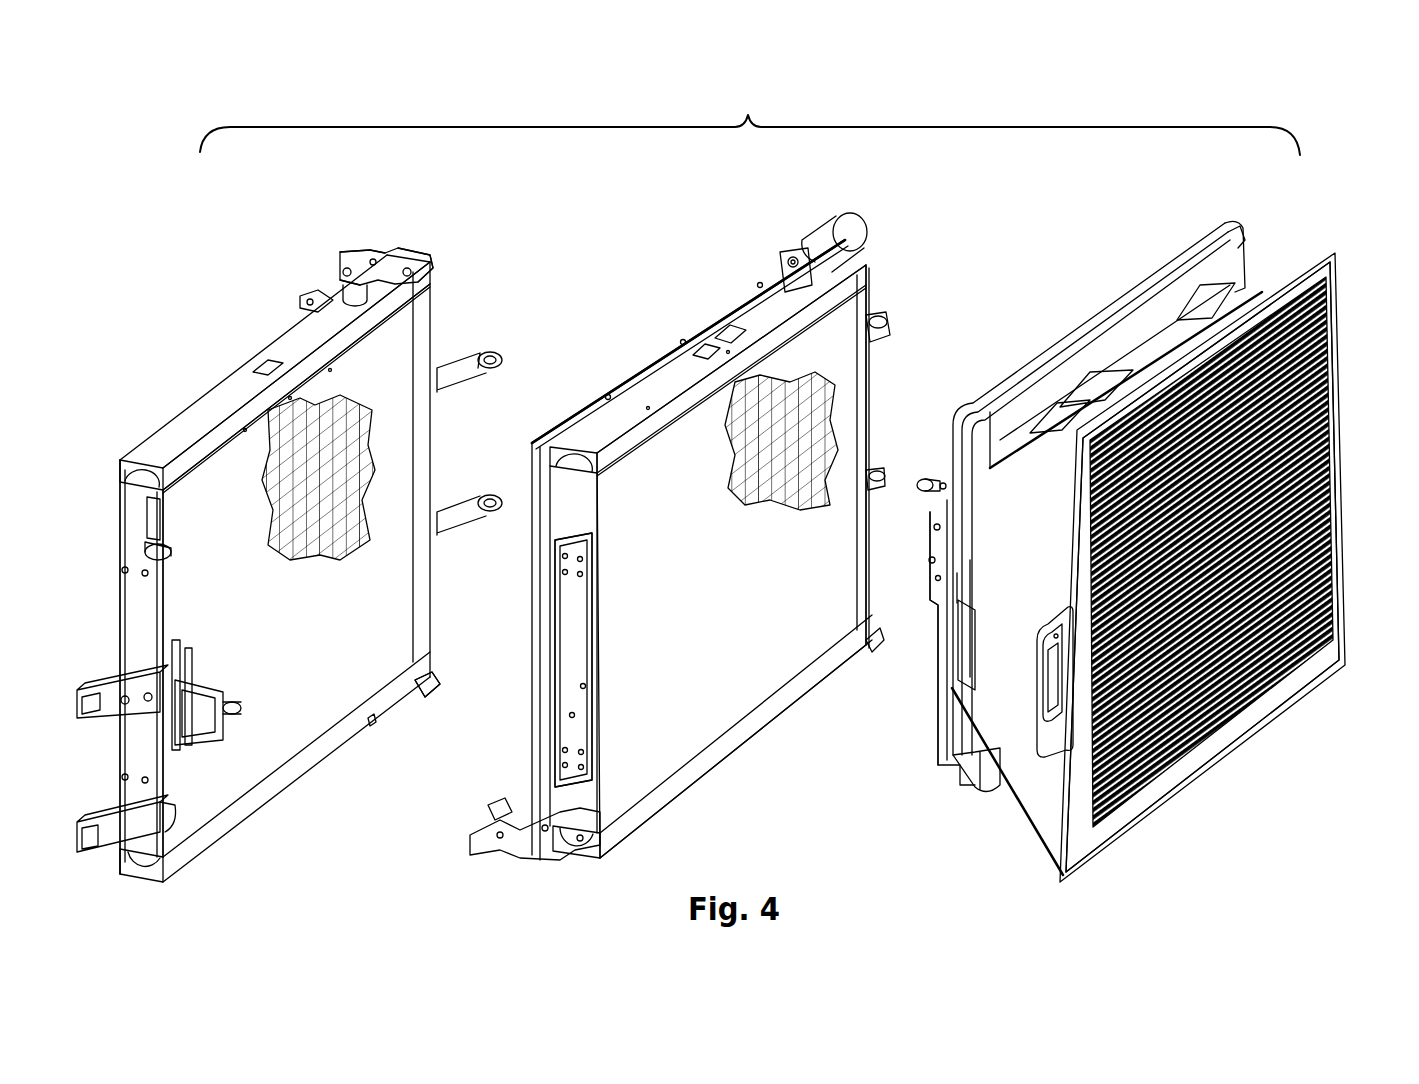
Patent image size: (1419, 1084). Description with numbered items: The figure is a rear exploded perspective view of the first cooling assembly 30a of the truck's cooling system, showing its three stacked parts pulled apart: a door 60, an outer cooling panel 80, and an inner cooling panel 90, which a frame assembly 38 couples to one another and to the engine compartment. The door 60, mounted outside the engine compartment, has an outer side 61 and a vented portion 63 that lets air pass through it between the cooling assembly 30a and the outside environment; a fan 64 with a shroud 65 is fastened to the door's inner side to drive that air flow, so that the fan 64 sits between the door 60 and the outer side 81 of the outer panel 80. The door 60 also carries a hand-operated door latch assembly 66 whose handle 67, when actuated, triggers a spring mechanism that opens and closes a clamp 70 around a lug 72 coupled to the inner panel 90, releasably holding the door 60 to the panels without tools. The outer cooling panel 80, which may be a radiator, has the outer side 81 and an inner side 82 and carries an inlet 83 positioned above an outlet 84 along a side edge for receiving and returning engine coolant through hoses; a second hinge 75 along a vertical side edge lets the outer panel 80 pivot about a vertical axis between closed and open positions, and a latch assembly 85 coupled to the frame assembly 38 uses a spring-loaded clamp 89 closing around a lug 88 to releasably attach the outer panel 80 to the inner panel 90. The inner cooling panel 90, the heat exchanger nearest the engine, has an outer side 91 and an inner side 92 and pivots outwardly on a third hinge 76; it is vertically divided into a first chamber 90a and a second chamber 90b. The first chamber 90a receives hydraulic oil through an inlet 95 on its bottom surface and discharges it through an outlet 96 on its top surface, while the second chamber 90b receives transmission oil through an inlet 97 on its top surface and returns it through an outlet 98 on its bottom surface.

The first cooling assembly 30a is at (750, 115).
The frame assembly 38 is at (137, 605).
The door 60 is at (1023, 782).
The outer side 61 is at (1268, 703).
The vented portion 63 is at (1323, 368).
The fan 64 is at (1167, 243).
The shroud 65 is at (1242, 225).
The door latch assembly 66 is at (1153, 780).
The handle 67 is at (1067, 700).
The clamp 70 is at (922, 633).
The lug 72 is at (183, 713).
The second hinge 75 is at (884, 322).
The third hinge 76 is at (473, 357).
The outer cooling panel 80 is at (862, 298).
The outer side 81 is at (660, 750).
The inner side 82 is at (702, 312).
The inlet 83 is at (867, 233).
The outlet 84 is at (884, 632).
The latch assembly 85 is at (177, 675).
The lug 88 is at (542, 673).
The clamp 89 is at (193, 705).
The inner cooling panel 90 is at (395, 347).
The first chamber 90a is at (397, 255).
The second chamber 90b is at (287, 338).
The outer side 91 is at (193, 795).
The inner side 92 is at (193, 400).
The inlet 95 is at (424, 697).
The outlet 96 is at (413, 268).
The inlet 97 is at (345, 272).
The outlet 98 is at (372, 722).